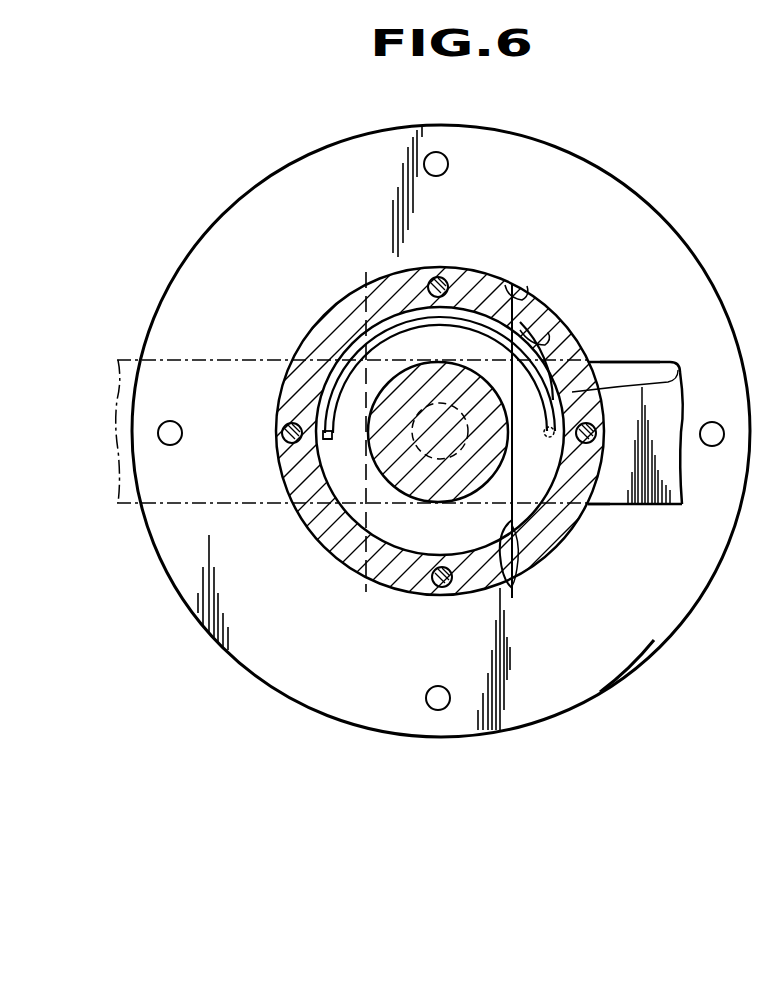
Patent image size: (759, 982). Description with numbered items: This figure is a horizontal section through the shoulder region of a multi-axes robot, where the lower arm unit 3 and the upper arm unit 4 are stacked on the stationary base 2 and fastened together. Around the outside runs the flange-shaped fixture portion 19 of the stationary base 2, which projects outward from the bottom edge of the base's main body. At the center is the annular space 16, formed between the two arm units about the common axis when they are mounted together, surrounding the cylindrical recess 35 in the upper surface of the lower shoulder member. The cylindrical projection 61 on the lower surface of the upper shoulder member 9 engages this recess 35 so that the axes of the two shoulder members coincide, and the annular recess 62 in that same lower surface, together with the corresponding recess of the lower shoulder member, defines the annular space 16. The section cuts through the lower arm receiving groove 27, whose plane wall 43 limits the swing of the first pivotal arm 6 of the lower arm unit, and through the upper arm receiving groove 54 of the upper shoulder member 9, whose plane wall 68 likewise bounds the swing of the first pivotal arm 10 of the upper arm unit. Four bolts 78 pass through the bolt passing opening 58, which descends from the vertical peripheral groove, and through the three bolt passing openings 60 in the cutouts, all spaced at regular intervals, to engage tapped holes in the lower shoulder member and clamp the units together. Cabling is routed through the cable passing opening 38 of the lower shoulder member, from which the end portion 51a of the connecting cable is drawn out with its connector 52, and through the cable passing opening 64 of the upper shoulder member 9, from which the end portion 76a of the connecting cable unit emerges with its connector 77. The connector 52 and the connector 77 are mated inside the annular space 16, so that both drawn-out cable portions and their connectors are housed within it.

The stationary base 2 is at (699, 615).
The lower arm unit 3 is at (675, 513).
The upper arm unit 4 is at (192, 505).
The first pivotal arm 6 is at (647, 361).
The upper shoulder member 9 is at (578, 338).
The first pivotal arm 10 is at (185, 357).
The annular space 16 is at (438, 450).
The flange-shaped fixture portion 19 is at (654, 645).
The lower arm receiving groove 27 is at (372, 585).
The cylindrical recess 35 is at (436, 458).
The cable passing opening 38 is at (330, 440).
The plane wall 43 is at (370, 275).
The end portion of connecting cable 51a is at (487, 283).
The connector 52 is at (508, 330).
The upper arm receiving groove 54 is at (510, 283).
The bolt passing opening 58 is at (554, 431).
The bolt passing opening 60 is at (432, 279).
The cylindrical projection 61 is at (340, 426).
The annular recess 62 is at (548, 540).
The cable passing opening 64 is at (590, 508).
The plane wall 68 is at (506, 590).
The end portion of connecting cable unit 76a is at (678, 366).
The connector 77 is at (547, 327).
The bolt 78 is at (445, 279).